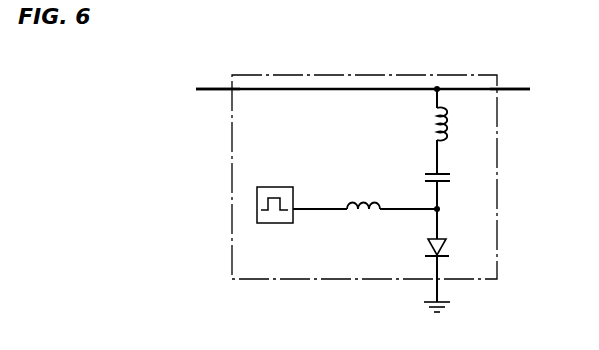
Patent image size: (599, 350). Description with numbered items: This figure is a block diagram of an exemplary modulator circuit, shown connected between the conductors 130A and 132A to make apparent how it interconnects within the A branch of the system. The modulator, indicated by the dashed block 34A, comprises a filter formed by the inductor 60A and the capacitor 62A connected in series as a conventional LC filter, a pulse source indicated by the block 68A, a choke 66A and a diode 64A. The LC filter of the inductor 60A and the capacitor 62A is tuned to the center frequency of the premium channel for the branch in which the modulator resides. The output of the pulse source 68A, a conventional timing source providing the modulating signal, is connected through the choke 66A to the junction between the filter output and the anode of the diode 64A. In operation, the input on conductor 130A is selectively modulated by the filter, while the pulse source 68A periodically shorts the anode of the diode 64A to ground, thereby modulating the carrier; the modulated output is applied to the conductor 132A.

The modulator 34A is at (330, 75).
The conductor 130A is at (207, 86).
The conductor 132A is at (517, 86).
The inductor 60A is at (432, 134).
The capacitor 62A is at (443, 173).
The diode 64A is at (428, 246).
The choke 66A is at (362, 196).
The pulse source 68A is at (282, 186).